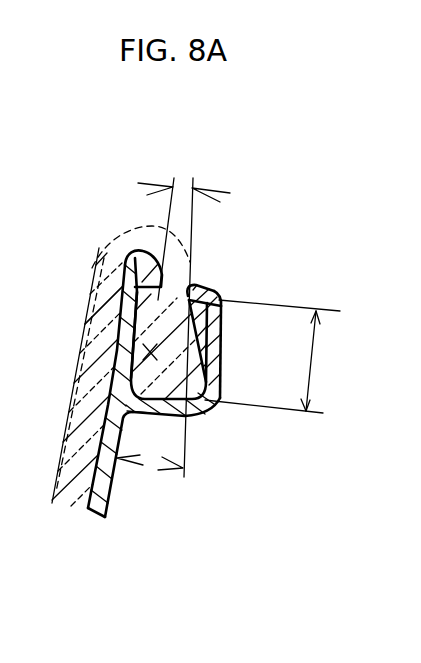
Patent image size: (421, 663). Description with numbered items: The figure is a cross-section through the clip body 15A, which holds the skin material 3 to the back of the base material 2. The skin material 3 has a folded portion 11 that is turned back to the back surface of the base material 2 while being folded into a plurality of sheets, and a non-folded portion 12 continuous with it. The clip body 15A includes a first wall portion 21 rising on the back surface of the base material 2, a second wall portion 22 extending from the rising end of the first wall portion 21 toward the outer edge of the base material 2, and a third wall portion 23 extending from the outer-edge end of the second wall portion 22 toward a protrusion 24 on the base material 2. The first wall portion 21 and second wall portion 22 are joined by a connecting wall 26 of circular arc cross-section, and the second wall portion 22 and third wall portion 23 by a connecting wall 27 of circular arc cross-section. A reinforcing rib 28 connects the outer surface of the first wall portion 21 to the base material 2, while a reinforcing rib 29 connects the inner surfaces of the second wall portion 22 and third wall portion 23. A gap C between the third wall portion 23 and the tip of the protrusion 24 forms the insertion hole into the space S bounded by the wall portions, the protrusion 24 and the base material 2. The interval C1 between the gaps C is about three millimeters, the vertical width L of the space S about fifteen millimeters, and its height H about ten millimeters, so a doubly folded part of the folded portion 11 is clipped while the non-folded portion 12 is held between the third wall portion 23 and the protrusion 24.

The base material 2 is at (110, 490).
The skin material 3 is at (80, 330).
The folded portion 11 is at (83, 307).
The non-folded portion 12 is at (110, 287).
The clip body 15A is at (252, 331).
The first wall portion 21 is at (168, 422).
The second wall portion 22 is at (223, 368).
The third wall portion 23 is at (210, 266).
The protrusion 24 is at (150, 270).
The connecting wall 26 is at (195, 414).
The connecting wall 27 is at (219, 292).
The reinforcing rib 28 is at (153, 427).
The reinforcing rib 29 is at (224, 316).
The space S is at (150, 353).
The vertical width L is at (312, 358).
The height H is at (146, 470).
The gap C is at (202, 258).
The interval C1 is at (181, 188).